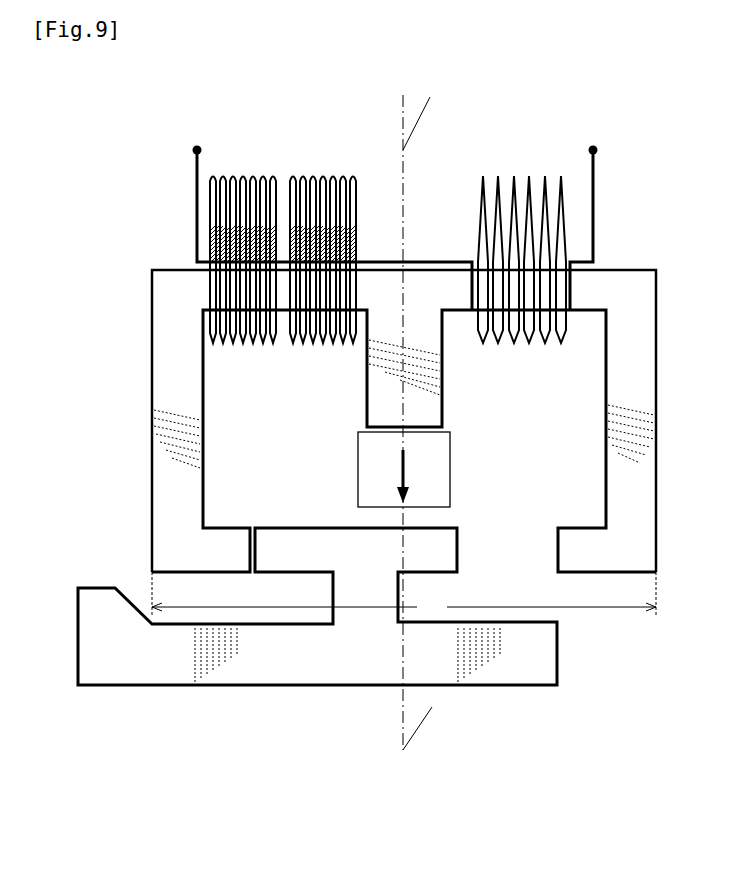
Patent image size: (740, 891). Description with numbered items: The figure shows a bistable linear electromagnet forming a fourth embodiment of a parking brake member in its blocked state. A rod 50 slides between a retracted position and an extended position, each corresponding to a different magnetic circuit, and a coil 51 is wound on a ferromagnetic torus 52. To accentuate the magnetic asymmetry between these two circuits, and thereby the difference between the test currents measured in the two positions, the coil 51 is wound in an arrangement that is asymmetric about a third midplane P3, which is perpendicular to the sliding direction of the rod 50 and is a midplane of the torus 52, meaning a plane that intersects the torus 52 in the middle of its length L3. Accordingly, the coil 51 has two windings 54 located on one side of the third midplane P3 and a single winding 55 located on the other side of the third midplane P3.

The rod 50 is at (297, 678).
The coil 51 is at (248, 172).
The ferromagnetic torus 52 is at (172, 332).
The windings 54 is at (270, 176).
The winding 55 is at (528, 175).
The third midplane P3 is at (412, 146).
The length of the torus L3 is at (404, 596).